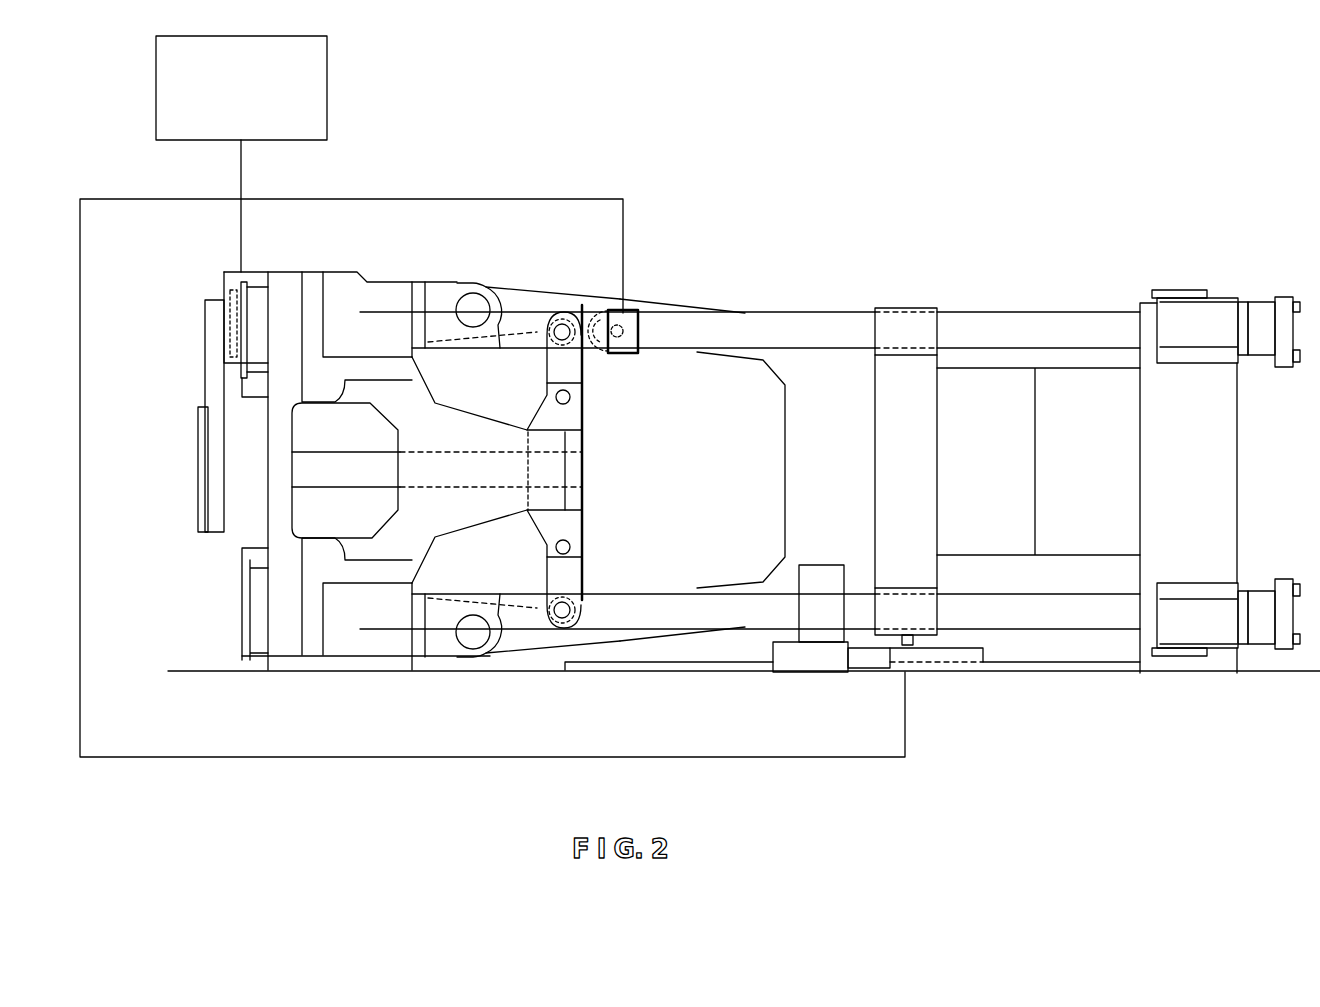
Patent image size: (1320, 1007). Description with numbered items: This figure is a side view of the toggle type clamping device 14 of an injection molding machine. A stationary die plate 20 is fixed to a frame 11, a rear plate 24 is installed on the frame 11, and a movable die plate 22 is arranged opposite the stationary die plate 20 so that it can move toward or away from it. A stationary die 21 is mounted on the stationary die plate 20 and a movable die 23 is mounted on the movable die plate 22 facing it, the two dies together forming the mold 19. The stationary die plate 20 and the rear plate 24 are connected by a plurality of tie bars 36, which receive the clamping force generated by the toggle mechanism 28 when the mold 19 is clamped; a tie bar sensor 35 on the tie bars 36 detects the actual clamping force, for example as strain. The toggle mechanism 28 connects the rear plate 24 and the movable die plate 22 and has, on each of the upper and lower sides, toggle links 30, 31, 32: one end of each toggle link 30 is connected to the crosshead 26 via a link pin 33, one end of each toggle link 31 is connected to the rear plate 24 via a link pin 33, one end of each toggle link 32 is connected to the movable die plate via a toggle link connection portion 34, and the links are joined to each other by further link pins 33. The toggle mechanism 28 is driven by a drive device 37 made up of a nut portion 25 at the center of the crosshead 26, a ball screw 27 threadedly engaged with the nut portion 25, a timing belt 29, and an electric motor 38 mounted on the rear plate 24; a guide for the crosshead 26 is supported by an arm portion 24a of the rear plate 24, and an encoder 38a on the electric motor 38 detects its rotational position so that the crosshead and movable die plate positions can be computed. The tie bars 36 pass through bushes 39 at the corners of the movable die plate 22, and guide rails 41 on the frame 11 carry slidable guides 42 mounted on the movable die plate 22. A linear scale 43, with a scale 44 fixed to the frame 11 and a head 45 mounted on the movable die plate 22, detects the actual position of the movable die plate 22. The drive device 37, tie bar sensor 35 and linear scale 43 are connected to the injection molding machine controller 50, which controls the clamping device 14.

The frame 11 is at (211, 666).
The toggle type clamping device 14 is at (720, 178).
The mold 19 is at (1087, 257).
The stationary die plate 20 is at (1208, 468).
The stationary die 21 is at (1077, 395).
The movable die plate 22 is at (922, 462).
The movable die 23 is at (1003, 395).
The rear plate 24 is at (290, 275).
The arm portion 24a is at (468, 512).
The nut portion 25 is at (540, 468).
The crosshead 26 is at (567, 523).
The ball screw 27 is at (377, 467).
The toggle mechanism 28 is at (645, 357).
The timing belt 29 is at (213, 372).
The toggle link 30 is at (585, 365).
The toggle link 31 is at (532, 300).
The toggle link 32 is at (643, 310).
The link pin 33 is at (468, 300).
The toggle link connection portion 34 is at (810, 465).
The tie bar sensor 35 is at (645, 335).
The tie bar 36 is at (815, 317).
The drive device 37 is at (193, 505).
The electric motor 38 is at (232, 293).
The encoder 38a is at (213, 318).
The bush 39 is at (897, 315).
The guide rail 41 is at (1093, 668).
The slidable guide 42 is at (820, 630).
The linear scale 43 is at (1010, 737).
The scale 44 is at (965, 658).
The head 45 is at (910, 640).
The injection molding machine controller 50 is at (225, 102).